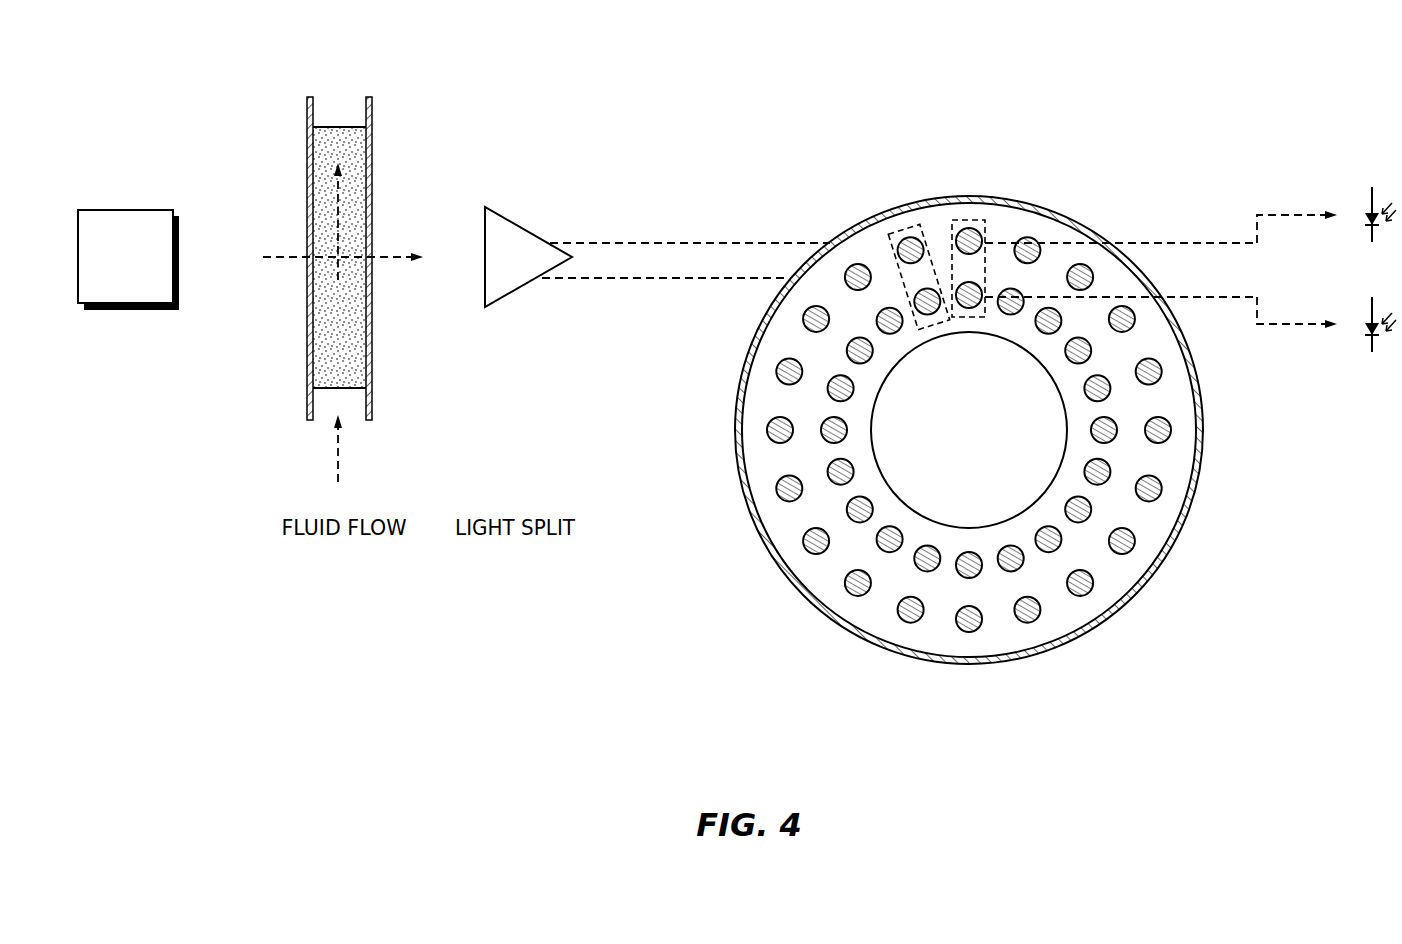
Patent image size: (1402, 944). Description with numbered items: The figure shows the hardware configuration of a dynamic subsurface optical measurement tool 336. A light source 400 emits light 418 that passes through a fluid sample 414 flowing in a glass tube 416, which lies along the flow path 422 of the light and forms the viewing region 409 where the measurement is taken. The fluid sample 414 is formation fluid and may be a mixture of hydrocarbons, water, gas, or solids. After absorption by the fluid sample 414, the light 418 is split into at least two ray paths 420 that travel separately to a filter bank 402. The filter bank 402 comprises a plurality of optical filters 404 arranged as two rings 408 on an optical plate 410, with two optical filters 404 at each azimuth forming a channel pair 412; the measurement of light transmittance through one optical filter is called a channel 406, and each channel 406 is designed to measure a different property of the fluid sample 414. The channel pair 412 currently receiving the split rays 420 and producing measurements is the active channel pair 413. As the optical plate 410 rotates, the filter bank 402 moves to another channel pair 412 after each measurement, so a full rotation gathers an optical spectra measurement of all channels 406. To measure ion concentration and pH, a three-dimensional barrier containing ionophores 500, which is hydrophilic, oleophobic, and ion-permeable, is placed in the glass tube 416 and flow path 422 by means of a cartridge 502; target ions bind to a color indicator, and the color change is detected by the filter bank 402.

The dynamic subsurface optical measurement tool 336 is at (1150, 117).
The light source 400 is at (107, 269).
The filter bank 402 is at (969, 436).
The optical filters 404 is at (950, 237).
The channel 406 is at (1210, 243).
The rings 408 is at (872, 615).
The viewing region 409 is at (833, 600).
The optical plate 410 is at (1075, 615).
The channel pair 412 is at (893, 233).
The active channel pair 413 is at (973, 220).
The fluid sample 414 is at (338, 445).
The glass tube 416 is at (372, 400).
The light 418 is at (530, 228).
The ray paths 420 is at (648, 278).
The flow path 422 is at (392, 253).
The three-dimensional barrier containing ionophores 500 is at (319, 357).
The cartridge 502 is at (340, 125).